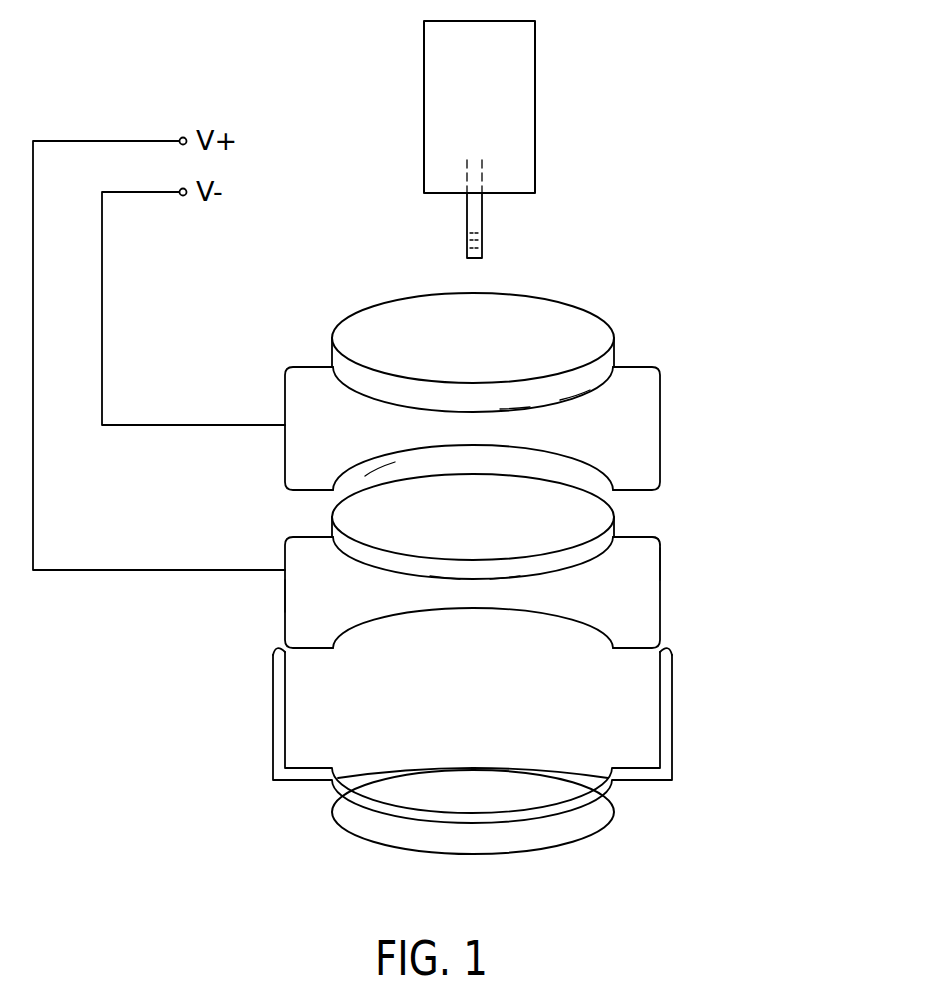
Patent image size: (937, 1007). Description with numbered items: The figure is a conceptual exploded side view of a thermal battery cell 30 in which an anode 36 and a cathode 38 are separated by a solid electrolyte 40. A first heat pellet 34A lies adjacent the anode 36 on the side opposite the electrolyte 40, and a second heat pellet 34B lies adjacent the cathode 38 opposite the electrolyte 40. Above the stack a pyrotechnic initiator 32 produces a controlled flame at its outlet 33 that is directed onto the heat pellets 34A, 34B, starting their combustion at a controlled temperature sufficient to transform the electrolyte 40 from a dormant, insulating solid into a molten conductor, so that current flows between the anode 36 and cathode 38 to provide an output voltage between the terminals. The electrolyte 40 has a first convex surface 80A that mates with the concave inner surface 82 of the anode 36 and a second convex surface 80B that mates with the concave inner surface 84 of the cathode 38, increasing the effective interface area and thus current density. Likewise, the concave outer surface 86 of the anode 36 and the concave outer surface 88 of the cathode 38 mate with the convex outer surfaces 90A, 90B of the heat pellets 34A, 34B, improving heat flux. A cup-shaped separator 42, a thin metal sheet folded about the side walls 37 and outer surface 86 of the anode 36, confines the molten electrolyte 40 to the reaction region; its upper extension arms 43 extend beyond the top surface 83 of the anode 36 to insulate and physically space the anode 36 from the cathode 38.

The thermal battery cell 30 is at (742, 214).
The pyrotechnic initiator 32 is at (535, 125).
The outlet 33 is at (476, 258).
The first heat pellet 34A is at (600, 828).
The second heat pellet 34B is at (615, 325).
The anode 36 is at (647, 597).
The side walls 37 is at (662, 557).
The cathode 38 is at (660, 425).
The electrolyte 40 is at (615, 510).
The separator 42 is at (672, 707).
The upper extension arms 43 is at (664, 648).
The first convex surface 80A is at (445, 560).
The second convex surface 80B is at (380, 482).
The concave inner surface 82 is at (500, 580).
The top surface 83 is at (663, 537).
The concave inner surface 84 is at (422, 452).
The outer surface 86 is at (560, 613).
The outer surface 88 is at (520, 403).
The convex outer surface 90A is at (423, 770).
The convex outer surface 90B is at (550, 378).